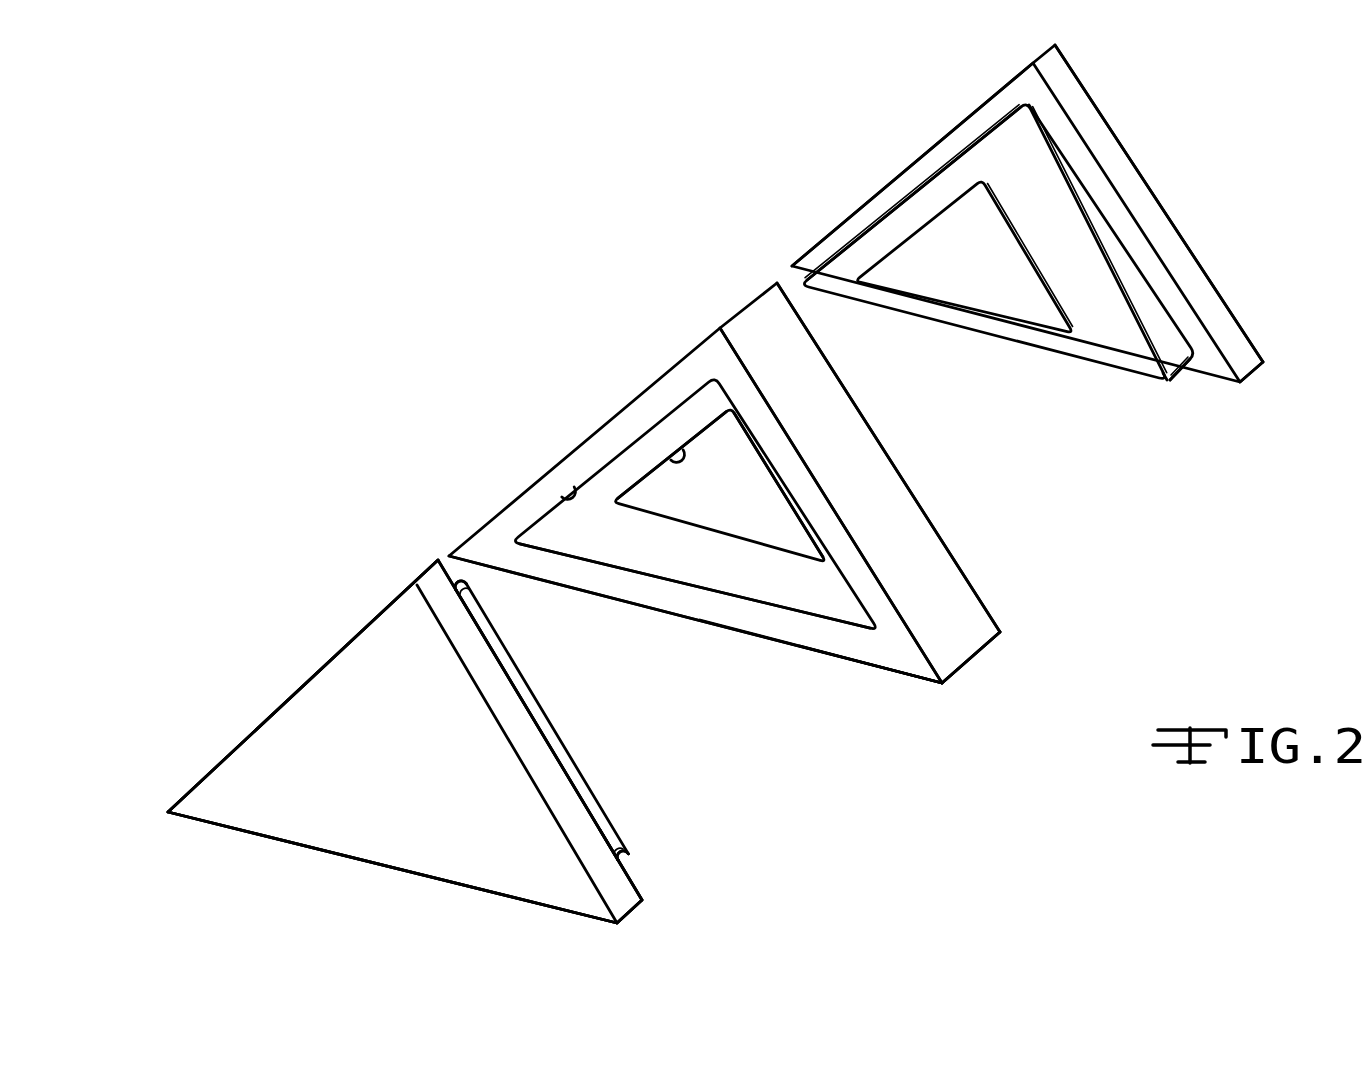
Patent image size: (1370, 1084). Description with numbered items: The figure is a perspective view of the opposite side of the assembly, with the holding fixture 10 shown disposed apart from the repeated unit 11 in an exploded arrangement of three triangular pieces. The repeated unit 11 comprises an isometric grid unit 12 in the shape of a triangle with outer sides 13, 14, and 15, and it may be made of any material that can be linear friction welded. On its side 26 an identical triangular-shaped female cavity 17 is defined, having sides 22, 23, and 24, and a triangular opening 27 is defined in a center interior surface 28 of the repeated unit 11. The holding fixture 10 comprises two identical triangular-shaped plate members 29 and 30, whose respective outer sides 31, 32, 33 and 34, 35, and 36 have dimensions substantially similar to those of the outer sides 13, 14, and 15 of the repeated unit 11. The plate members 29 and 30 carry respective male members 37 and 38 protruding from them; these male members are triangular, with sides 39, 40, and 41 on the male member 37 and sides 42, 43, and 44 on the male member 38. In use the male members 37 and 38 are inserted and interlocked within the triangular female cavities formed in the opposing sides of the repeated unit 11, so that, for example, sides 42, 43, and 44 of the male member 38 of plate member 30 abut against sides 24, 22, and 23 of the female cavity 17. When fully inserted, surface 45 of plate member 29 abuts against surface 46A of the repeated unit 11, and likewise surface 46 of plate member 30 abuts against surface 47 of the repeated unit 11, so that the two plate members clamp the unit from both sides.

The holding fixture 10 is at (1157, 197).
The repeated unit 11 is at (890, 670).
The isometric grid unit 12 is at (982, 603).
The outer side 13 is at (935, 565).
The outer side 14 is at (798, 647).
The outer side 15 is at (675, 362).
The female cavity 17 is at (620, 470).
The side of female cavity 22 is at (562, 497).
The side of female cavity 23 is at (687, 593).
The side of female cavity 24 is at (777, 457).
The side of repeated unit 26 is at (747, 620).
The triangular opening 27 is at (663, 457).
The center interior surface 28 is at (675, 530).
The plate member 29 is at (1200, 262).
The plate member 30 is at (270, 818).
The outer side of plate member 31 is at (1230, 345).
The outer side of plate member 32 is at (1200, 363).
The outer side of plate member 33 is at (873, 197).
The outer side of plate member 34 is at (632, 880).
The outer side of plate member 35 is at (328, 855).
The outer side of plate member 36 is at (278, 705).
The male member 37 is at (1095, 338).
The male member 38 is at (617, 838).
The side of male member 39 is at (1077, 220).
The side of male member 40 is at (935, 170).
The side of male member 41 is at (922, 322).
The side of male member 42 is at (568, 746).
The side of male member 43 is at (463, 590).
The side of male member 44 is at (623, 863).
The surface of plate member 45 is at (1206, 365).
The surface of plate member 46 is at (640, 895).
The surface of repeated unit 46A is at (907, 483).
The surface of repeated unit 47 is at (840, 643).